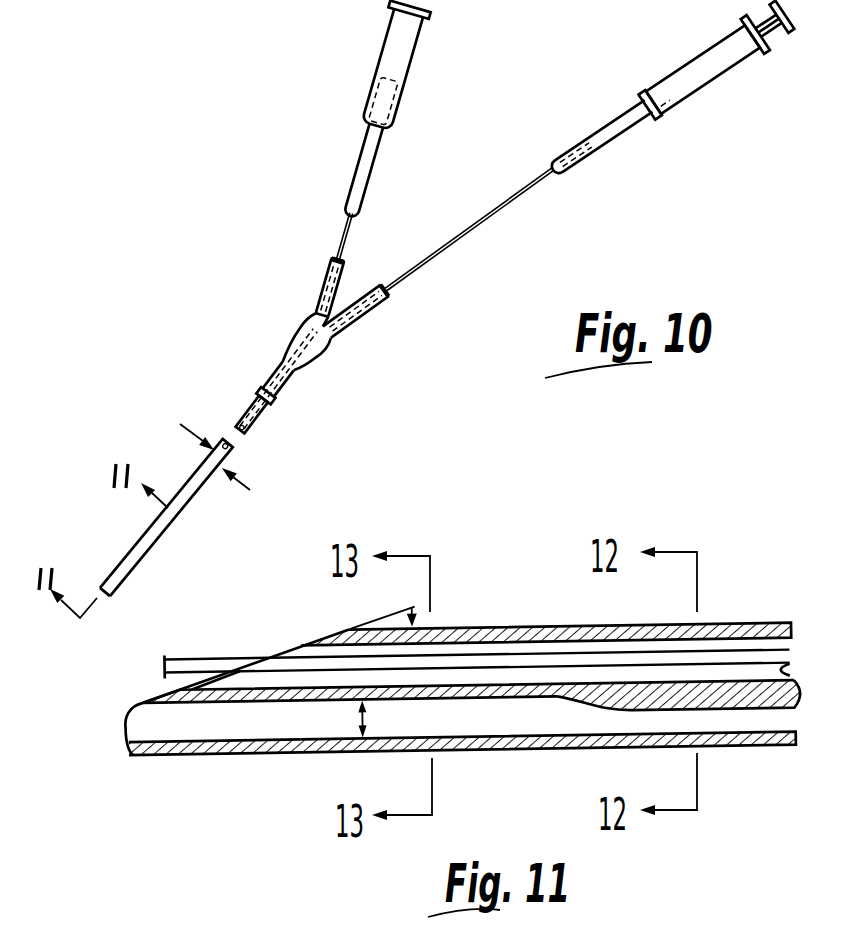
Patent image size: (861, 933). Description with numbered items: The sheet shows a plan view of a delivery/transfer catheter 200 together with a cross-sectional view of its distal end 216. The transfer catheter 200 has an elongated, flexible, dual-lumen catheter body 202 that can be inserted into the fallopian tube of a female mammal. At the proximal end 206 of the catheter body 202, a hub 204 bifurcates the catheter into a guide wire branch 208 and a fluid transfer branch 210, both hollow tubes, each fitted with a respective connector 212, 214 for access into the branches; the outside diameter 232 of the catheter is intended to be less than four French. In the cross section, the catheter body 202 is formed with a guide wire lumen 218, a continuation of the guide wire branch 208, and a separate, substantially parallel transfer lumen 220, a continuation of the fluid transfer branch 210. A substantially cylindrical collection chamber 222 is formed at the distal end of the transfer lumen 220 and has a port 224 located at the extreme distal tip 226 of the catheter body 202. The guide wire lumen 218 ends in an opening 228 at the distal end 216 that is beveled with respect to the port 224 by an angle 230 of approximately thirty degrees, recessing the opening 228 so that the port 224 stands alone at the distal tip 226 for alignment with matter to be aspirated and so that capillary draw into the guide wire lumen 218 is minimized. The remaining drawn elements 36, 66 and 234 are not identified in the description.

In FIG. 10, the transfer catheter 200 is at (426, 309).
In FIG. 10, the catheter body 202 is at (264, 470).
In FIG. 11, the catheter body 202 is at (553, 602).
In FIG. 10, the hub 204 is at (269, 363).
In FIG. 10, the proximal end 206 is at (314, 380).
In FIG. 10, the guide wire branch 208 is at (307, 254).
In FIG. 10, the fluid transfer branch 210 is at (463, 251).
In FIG. 10, the connector 212 is at (367, 111).
In FIG. 10, the connector 214 is at (619, 148).
In FIG. 10, the syringe 36 is at (715, 73).
In FIG. 10, the distal end 216 is at (144, 517).
In FIG. 11, the distal end 216 is at (548, 774).
In FIG. 11, the guide wire lumen 218 is at (468, 636).
In FIG. 11, the transfer lumen 220 is at (671, 741).
In FIG. 11, the collection chamber 222 is at (350, 769).
In FIG. 11, the port 224 is at (215, 769).
In FIG. 10, the distal tip 226 is at (143, 592).
In FIG. 11, the distal tip 226 is at (99, 710).
In FIG. 11, the opening 228 is at (246, 648).
In FIG. 11, the angle 230 is at (368, 600).
In FIG. 10, the outside diameter 232 is at (254, 463).
In FIG. 11, the lumen diameter 234 is at (377, 749).
In FIG. 11, the guidewire 66 is at (476, 626).